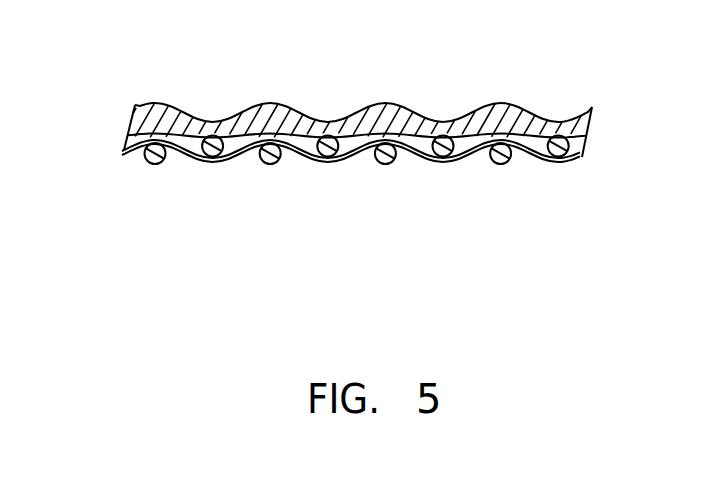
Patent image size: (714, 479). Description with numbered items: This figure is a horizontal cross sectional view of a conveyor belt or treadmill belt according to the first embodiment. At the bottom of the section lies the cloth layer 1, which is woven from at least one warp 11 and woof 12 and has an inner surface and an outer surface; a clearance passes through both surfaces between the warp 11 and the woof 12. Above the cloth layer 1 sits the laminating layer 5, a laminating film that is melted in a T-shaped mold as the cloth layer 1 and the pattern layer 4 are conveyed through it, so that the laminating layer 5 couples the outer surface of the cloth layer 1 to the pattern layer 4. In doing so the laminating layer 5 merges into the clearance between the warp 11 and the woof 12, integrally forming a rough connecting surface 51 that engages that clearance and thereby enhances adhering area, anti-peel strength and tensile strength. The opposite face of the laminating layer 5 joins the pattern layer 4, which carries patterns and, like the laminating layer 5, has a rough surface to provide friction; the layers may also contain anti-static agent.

The cloth layer 1 is at (121, 149).
The pattern layer 4 is at (207, 121).
The laminating layer 5 is at (408, 124).
The connecting surface 51 is at (305, 145).
The warp 11 is at (265, 158).
The woof 12 is at (347, 158).